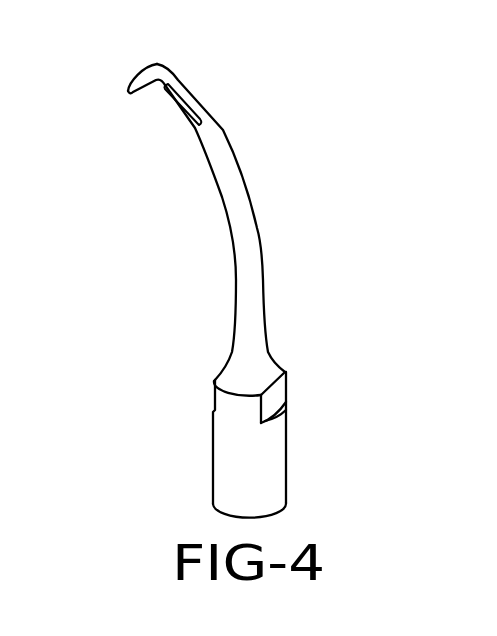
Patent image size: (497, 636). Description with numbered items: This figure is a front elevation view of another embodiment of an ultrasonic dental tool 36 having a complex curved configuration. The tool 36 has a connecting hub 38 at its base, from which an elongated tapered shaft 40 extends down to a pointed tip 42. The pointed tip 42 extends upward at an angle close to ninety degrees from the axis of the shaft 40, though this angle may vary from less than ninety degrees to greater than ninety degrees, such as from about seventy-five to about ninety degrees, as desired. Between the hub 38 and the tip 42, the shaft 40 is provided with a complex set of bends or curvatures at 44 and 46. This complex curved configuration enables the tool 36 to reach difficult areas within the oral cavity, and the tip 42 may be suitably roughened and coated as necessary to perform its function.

The ultrasonic dental tool 36 is at (203, 282).
The connecting hub 38 is at (257, 462).
The elongated tapered shaft 40 is at (237, 193).
The pointed tip 42 is at (142, 79).
The bend 44 is at (250, 246).
The bend 46 is at (223, 128).